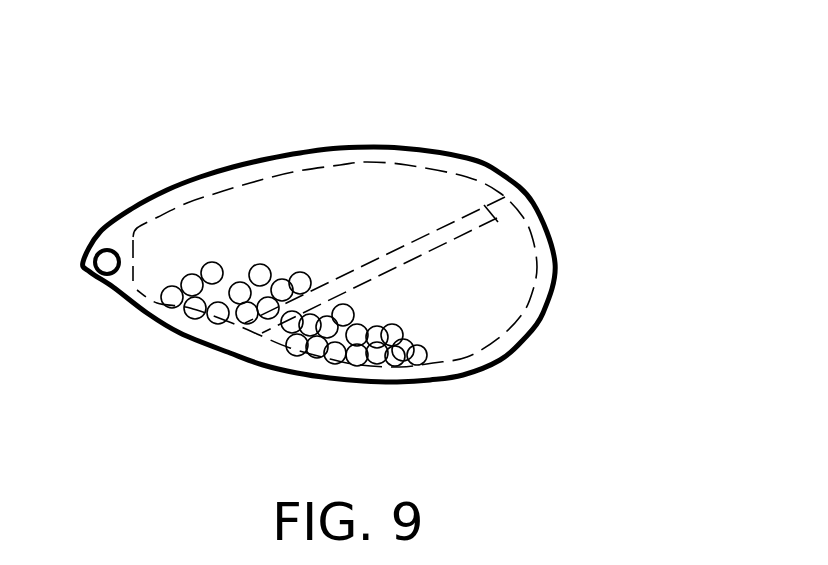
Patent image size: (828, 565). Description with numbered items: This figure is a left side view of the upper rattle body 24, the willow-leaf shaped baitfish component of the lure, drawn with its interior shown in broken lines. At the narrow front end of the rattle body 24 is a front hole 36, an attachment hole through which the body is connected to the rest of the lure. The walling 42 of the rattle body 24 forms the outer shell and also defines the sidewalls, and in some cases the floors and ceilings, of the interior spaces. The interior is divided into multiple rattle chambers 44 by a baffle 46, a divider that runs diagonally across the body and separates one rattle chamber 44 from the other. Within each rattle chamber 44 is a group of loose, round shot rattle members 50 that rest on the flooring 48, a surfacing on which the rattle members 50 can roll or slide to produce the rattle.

The upper rattle body 24 is at (533, 198).
The front hole 36 is at (104, 260).
The walling 42 is at (367, 157).
The rattle chamber 44 is at (273, 215).
The baffle 46 is at (490, 212).
The flooring 48 is at (460, 352).
The rattle member 50 is at (297, 343).